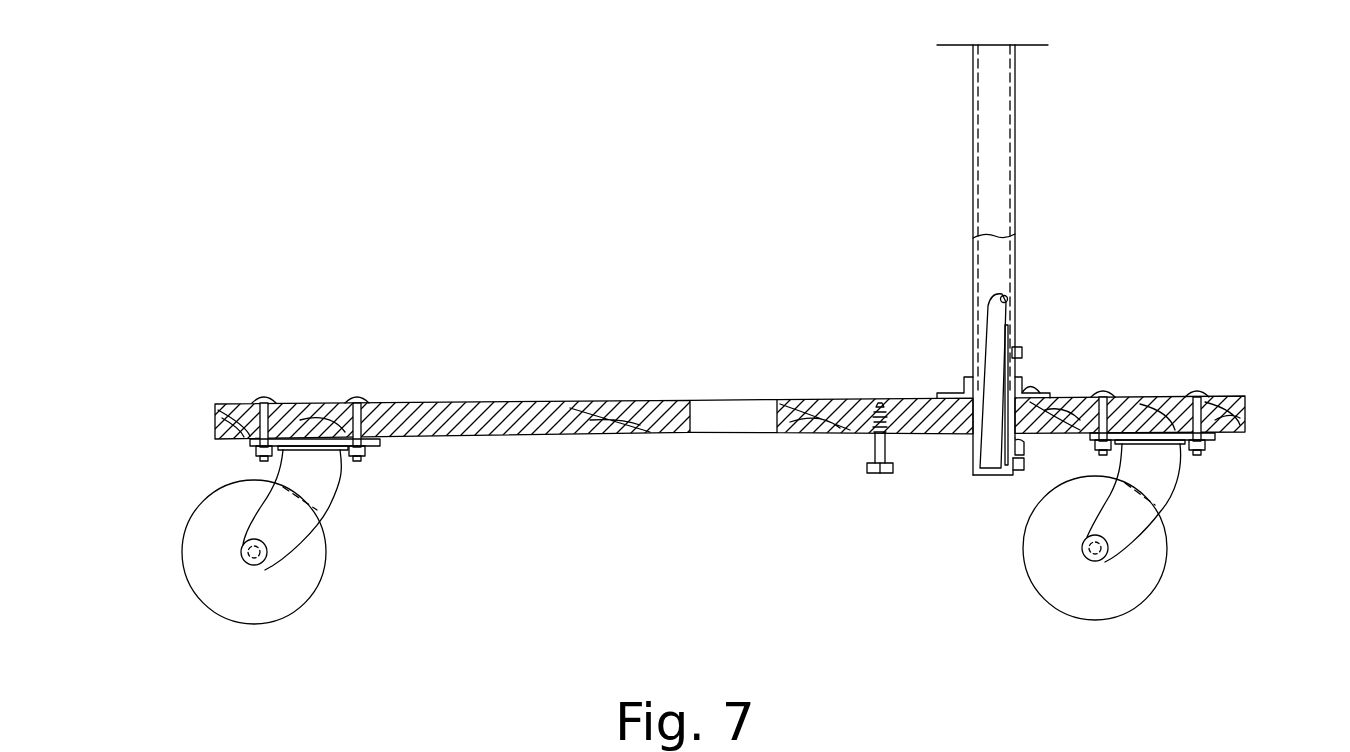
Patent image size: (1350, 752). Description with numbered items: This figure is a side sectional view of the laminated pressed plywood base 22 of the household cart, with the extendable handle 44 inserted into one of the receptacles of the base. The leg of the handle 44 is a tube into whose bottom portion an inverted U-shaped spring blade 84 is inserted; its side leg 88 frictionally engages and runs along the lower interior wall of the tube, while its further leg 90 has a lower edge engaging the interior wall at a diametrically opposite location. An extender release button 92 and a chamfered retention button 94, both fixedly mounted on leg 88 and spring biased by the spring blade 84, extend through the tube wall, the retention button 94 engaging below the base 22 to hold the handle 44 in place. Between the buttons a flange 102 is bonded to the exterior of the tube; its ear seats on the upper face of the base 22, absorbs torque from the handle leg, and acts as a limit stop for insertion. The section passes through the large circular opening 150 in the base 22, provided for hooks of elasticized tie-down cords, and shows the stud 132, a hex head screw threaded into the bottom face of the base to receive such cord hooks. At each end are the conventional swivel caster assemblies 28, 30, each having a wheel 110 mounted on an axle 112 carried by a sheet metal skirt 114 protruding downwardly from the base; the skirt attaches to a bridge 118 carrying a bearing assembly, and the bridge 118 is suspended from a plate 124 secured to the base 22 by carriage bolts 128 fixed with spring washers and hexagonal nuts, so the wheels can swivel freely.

The base 22 is at (613, 402).
The circular opening 150 is at (758, 410).
The extendable handle 44 is at (1015, 192).
The spring blade 84 is at (990, 305).
The side leg 88 is at (1013, 292).
The further leg 90 is at (980, 328).
The extender release button 92 is at (1022, 348).
The flange 102 is at (1027, 390).
The chamfered retention button 94 is at (1022, 460).
The stud 132 is at (877, 447).
The carriage bolt 128 is at (262, 401).
The plate 124 is at (377, 442).
The bridge 118 is at (307, 450).
The caster assembly 28 is at (181, 506).
The caster assembly 30 is at (1165, 575).
The sheet metal skirt 114 is at (327, 483).
The axle 112 is at (243, 550).
The wheel 110 is at (308, 587).